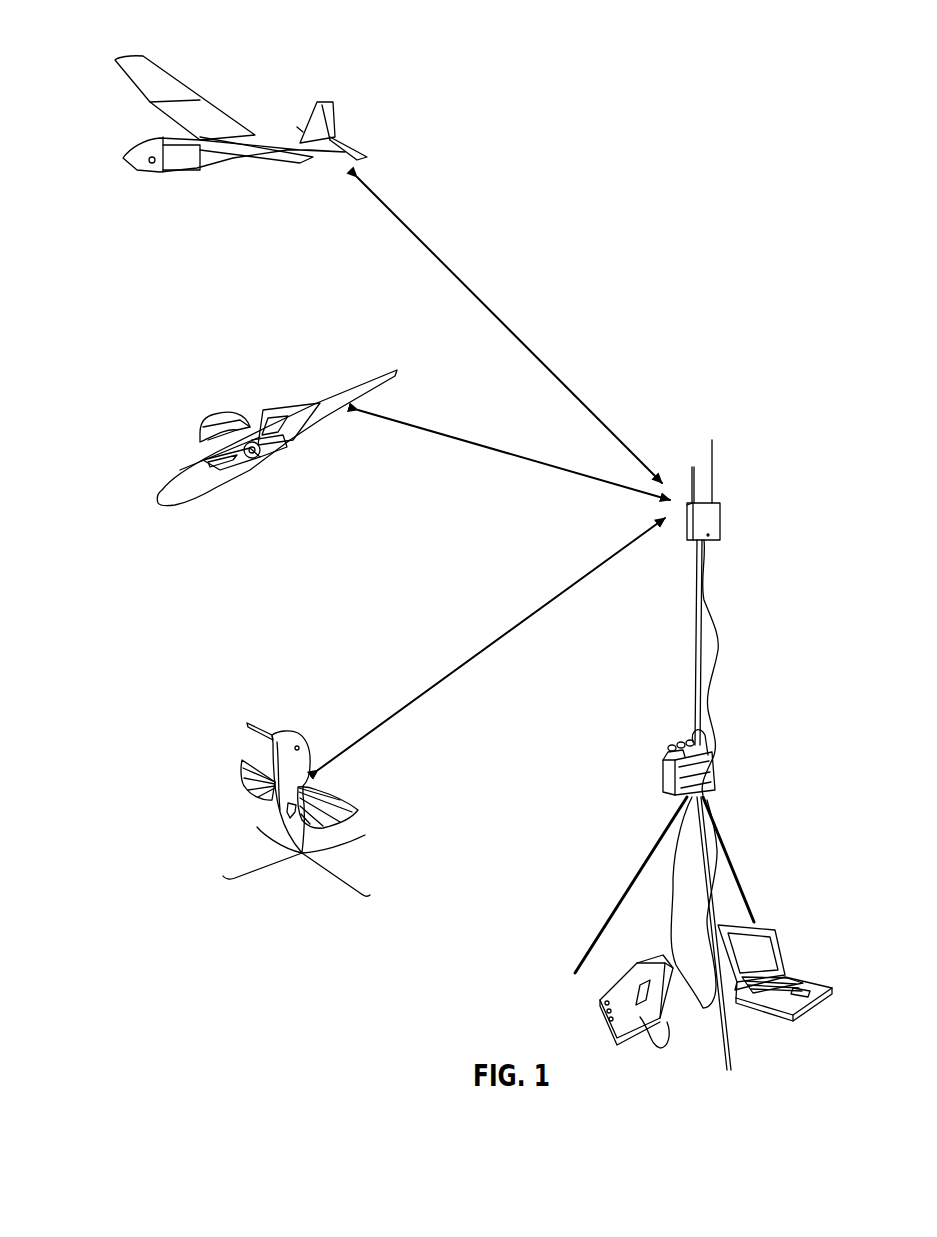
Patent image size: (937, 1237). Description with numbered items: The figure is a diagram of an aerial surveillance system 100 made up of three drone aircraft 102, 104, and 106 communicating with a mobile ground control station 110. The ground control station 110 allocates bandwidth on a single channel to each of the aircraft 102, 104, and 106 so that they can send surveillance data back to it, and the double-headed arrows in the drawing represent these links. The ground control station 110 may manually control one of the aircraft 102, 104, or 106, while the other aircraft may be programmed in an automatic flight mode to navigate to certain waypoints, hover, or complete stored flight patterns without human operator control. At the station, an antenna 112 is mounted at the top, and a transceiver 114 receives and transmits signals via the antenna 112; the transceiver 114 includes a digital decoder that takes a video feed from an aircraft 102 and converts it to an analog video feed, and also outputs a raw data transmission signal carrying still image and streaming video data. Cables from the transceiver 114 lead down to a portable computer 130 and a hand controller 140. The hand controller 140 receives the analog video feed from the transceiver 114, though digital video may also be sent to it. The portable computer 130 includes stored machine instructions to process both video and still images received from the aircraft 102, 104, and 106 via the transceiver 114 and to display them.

The aerial surveillance system 100 is at (647, 365).
The drone aircraft 102 is at (210, 108).
The drone aircraft 104 is at (265, 412).
The drone aircraft 106 is at (300, 733).
The mobile ground control station 110 is at (760, 488).
The antenna 112 is at (712, 467).
The transceiver 114 is at (722, 530).
The portable computer 130 is at (803, 977).
The hand controller 140 is at (622, 977).